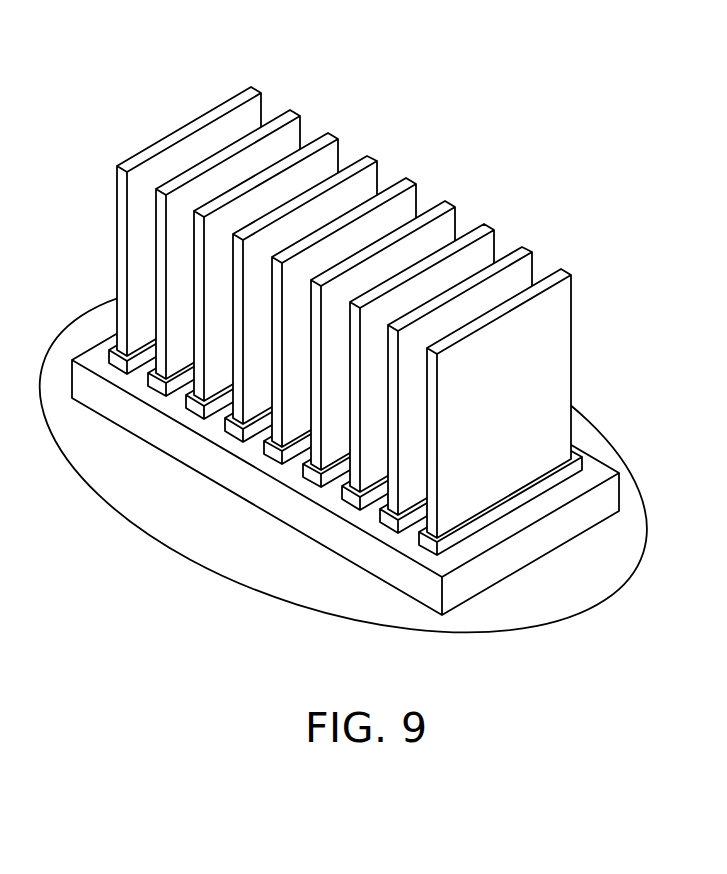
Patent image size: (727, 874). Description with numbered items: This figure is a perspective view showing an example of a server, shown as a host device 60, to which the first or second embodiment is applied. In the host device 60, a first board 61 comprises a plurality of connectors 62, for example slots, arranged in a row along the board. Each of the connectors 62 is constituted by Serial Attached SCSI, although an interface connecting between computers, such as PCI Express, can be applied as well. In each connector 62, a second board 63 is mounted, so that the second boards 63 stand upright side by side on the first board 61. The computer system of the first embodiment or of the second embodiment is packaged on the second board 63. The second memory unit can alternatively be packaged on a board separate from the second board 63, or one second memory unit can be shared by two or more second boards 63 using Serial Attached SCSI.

The host device 60 is at (95, 72).
The first board 61 is at (213, 467).
The connectors 62 is at (427, 545).
The second board 63 is at (572, 290).